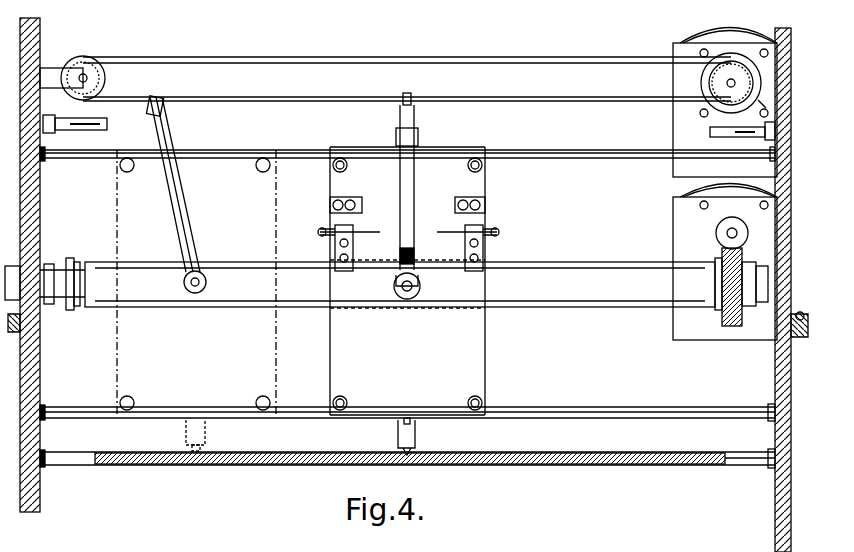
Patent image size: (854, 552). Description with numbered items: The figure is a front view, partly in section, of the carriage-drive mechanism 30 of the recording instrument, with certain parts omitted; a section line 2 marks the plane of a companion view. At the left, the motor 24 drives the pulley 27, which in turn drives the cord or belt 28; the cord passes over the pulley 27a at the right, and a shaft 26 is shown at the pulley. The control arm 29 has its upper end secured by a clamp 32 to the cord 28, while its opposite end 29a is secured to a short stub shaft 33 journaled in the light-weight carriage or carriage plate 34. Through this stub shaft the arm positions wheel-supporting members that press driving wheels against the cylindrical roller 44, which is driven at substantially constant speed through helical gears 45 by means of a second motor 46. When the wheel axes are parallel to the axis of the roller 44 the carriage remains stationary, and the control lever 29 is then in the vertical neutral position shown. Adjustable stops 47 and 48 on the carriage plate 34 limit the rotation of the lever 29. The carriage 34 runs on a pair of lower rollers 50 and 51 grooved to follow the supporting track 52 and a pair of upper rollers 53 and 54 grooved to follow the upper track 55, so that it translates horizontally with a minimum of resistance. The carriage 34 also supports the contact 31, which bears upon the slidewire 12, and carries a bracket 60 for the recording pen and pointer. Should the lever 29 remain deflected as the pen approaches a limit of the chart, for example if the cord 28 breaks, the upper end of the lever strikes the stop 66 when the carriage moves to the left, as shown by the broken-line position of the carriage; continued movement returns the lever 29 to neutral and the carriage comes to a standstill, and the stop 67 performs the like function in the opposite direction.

The section line 2- 2 is at (105, 55).
The slidewire 12 is at (598, 470).
The motor 24 is at (690, 44).
The pulley shaft 26 is at (768, 103).
The pulley 27 is at (710, 82).
The pulley 27a is at (106, 78).
The cord or belt 28 is at (432, 50).
The control arm 29 is at (415, 180).
The opposite end of the arm 29a is at (206, 282).
The mechanism 30 is at (410, 347).
The contact 31 is at (206, 440).
The clamp 32 is at (400, 108).
The stub shaft 33 is at (394, 286).
The carriage plate 34 is at (276, 344).
The roller 44 is at (606, 278).
The helical gears 45 is at (722, 248).
The motor 46 is at (690, 188).
The adjustable stop 47 is at (464, 248).
The adjustable stop 48 is at (349, 248).
The lower roller 50 is at (128, 397).
The lower roller 51 is at (262, 397).
The supporting track 52 is at (540, 407).
The upper roller 53 is at (120, 170).
The upper roller 54 is at (256, 167).
The upper track 55 is at (512, 150).
The bracket 60 is at (330, 200).
The stop 66 is at (107, 130).
The stop 67 is at (710, 130).